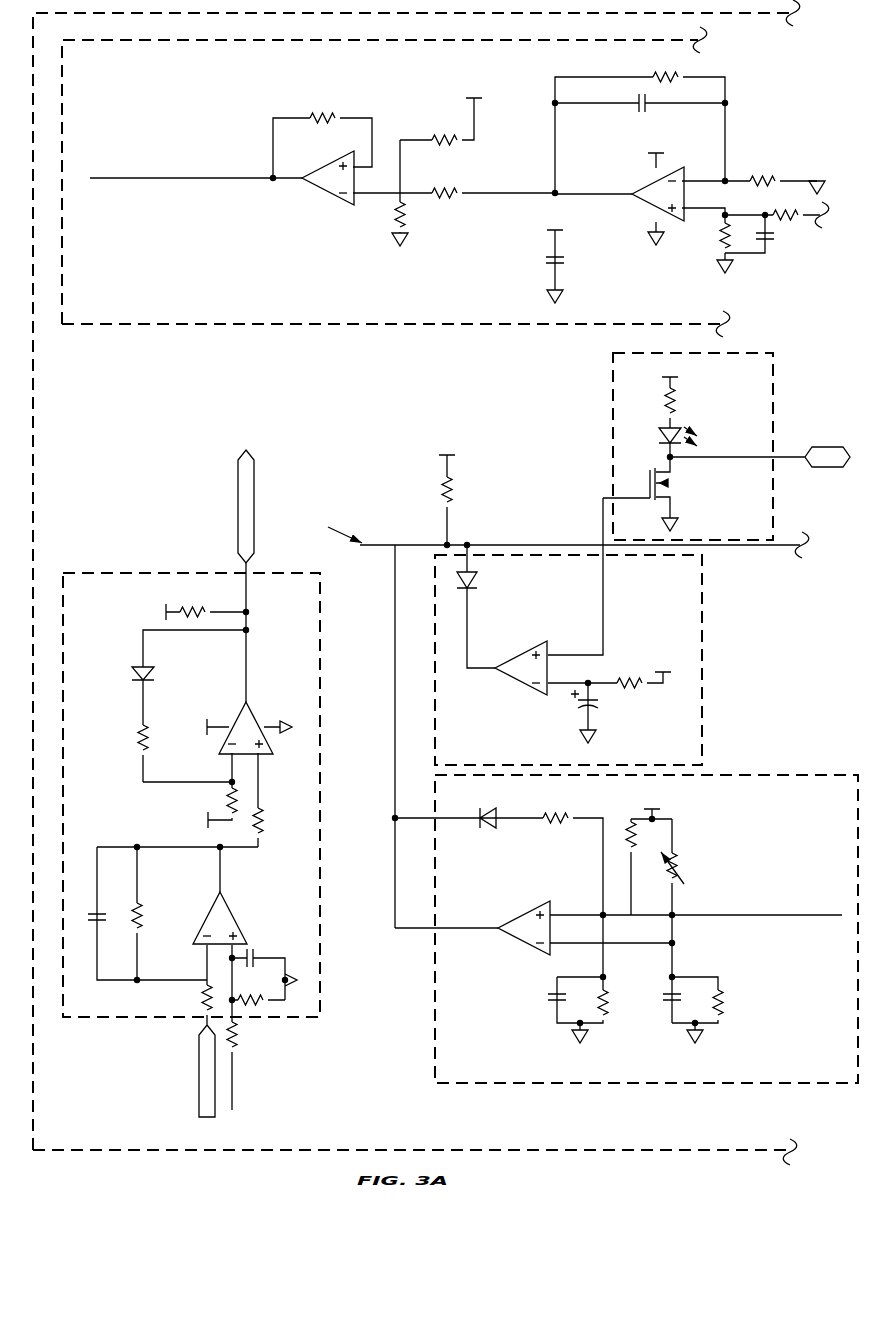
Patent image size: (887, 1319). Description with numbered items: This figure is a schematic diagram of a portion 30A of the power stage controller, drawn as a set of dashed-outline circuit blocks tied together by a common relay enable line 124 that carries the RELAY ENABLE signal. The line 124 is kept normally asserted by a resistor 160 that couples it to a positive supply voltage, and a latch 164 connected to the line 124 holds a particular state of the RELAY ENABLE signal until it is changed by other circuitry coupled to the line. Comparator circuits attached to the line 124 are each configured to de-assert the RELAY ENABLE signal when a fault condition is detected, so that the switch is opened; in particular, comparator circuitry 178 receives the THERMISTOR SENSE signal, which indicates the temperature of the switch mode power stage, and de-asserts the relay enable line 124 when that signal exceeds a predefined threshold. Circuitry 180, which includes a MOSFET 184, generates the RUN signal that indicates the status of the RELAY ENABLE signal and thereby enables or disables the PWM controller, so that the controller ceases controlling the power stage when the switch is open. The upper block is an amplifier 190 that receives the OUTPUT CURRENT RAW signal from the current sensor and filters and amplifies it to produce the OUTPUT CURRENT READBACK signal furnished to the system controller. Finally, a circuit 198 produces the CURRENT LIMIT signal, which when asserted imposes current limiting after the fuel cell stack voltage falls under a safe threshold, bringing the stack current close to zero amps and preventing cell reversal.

The portion of the controller 30A is at (668, 1152).
The amplifier 190 is at (417, 330).
The relay enable line 124 is at (387, 542).
The resistor 160 is at (440, 483).
The circuitry 180 is at (611, 381).
The MOSFET 184 is at (645, 484).
The latch 164 is at (430, 639).
The comparator circuitry 178 is at (433, 1010).
The circuit 198 is at (127, 568).